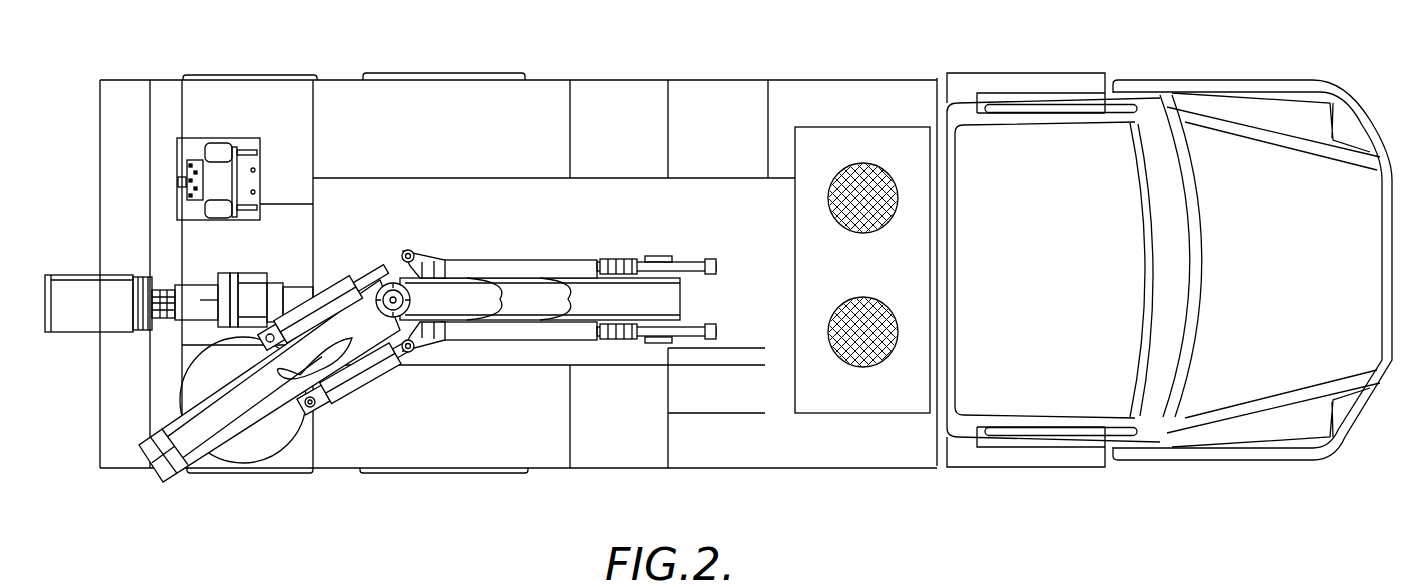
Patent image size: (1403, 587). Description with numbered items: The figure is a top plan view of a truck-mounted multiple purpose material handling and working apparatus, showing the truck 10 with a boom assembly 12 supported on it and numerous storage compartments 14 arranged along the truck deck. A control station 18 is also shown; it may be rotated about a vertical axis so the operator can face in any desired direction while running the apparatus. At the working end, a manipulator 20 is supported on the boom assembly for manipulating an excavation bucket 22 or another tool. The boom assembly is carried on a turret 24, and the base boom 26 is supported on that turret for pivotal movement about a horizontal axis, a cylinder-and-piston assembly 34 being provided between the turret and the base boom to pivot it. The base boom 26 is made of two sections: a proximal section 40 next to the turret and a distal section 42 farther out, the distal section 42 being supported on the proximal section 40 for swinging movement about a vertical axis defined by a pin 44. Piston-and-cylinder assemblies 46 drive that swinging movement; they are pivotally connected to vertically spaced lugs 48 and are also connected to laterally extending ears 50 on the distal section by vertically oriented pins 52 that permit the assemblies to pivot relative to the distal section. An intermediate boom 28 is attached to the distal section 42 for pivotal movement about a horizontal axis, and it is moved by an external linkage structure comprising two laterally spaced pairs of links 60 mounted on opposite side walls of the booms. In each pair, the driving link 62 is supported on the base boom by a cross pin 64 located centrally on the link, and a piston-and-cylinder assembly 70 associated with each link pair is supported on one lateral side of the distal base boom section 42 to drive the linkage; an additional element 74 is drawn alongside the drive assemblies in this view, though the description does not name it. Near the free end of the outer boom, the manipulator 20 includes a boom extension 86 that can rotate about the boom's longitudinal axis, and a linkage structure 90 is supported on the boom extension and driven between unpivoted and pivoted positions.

The truck 10 is at (1186, 471).
The boom assembly 12 is at (270, 381).
The storage compartments 14 is at (578, 76).
The control station 18 is at (222, 133).
The manipulator 20 is at (249, 270).
The excavation bucket 22 is at (75, 283).
The turret 24 is at (253, 458).
The base boom 26 is at (477, 262).
The intermediate boom 28 is at (297, 287).
The cylinder-and-piston assembly 34 is at (149, 469).
The proximal section 40 is at (195, 445).
The distal section 42 is at (512, 310).
The pin 44 is at (395, 282).
The piston-and-cylinder assemblies 46 is at (329, 282).
The lugs 48 is at (325, 404).
The ears 50 is at (425, 261).
The pins 52 is at (410, 248).
The links 60 is at (693, 252).
The driving link 62 is at (703, 323).
The cross pin 64 is at (653, 258).
The piston-and-cylinder assembly 70 is at (549, 251).
The bearing block 74 is at (624, 262).
The boom extension 86 is at (191, 276).
The linkage structure 90 is at (167, 340).